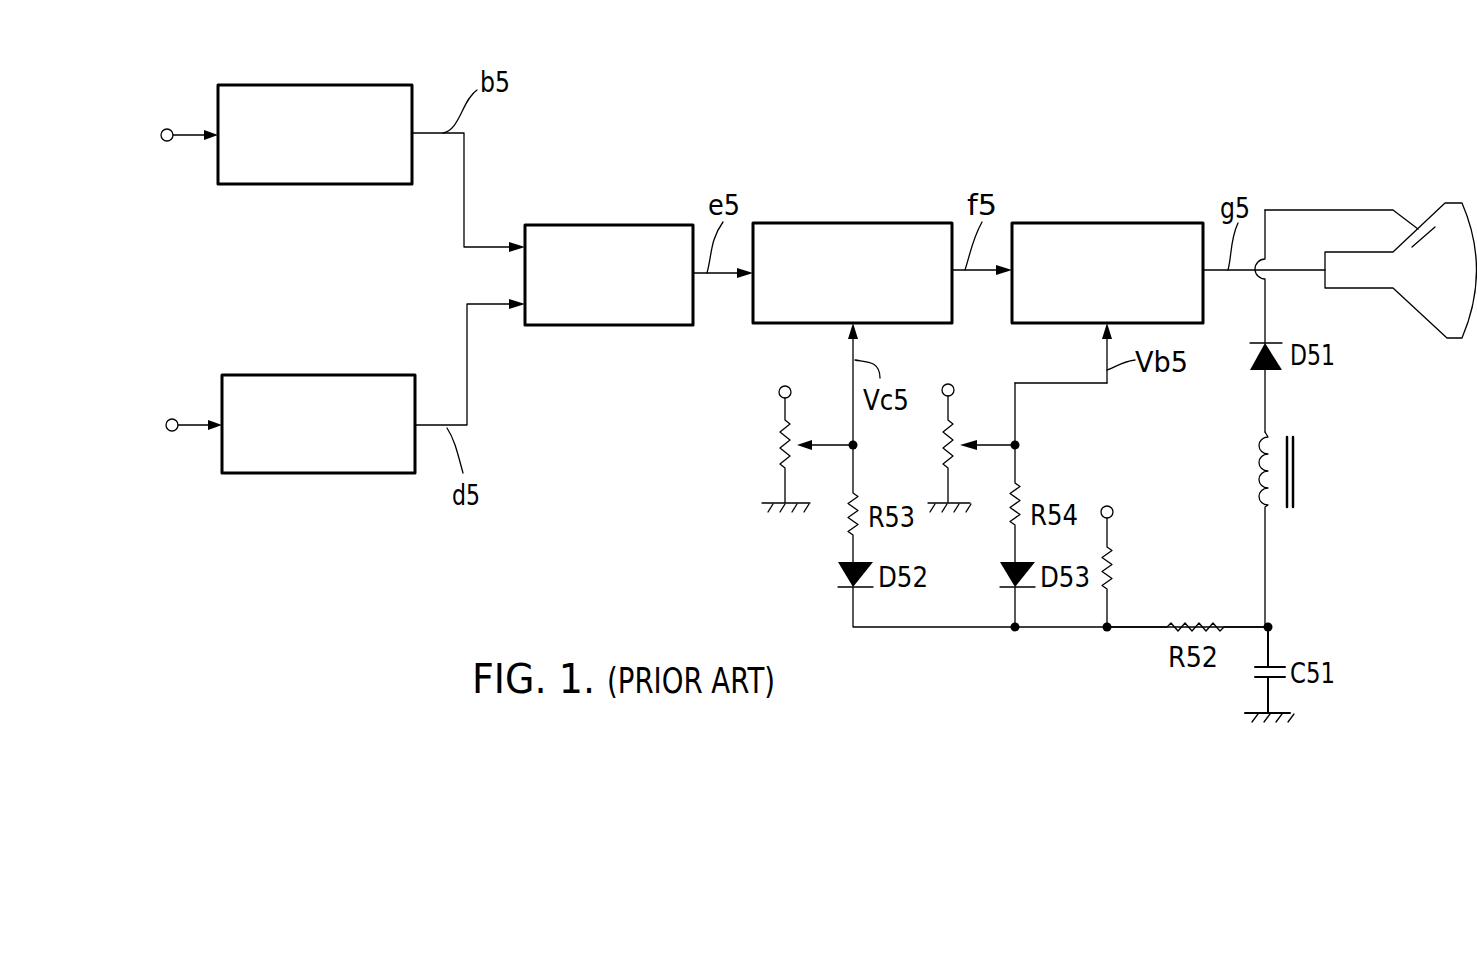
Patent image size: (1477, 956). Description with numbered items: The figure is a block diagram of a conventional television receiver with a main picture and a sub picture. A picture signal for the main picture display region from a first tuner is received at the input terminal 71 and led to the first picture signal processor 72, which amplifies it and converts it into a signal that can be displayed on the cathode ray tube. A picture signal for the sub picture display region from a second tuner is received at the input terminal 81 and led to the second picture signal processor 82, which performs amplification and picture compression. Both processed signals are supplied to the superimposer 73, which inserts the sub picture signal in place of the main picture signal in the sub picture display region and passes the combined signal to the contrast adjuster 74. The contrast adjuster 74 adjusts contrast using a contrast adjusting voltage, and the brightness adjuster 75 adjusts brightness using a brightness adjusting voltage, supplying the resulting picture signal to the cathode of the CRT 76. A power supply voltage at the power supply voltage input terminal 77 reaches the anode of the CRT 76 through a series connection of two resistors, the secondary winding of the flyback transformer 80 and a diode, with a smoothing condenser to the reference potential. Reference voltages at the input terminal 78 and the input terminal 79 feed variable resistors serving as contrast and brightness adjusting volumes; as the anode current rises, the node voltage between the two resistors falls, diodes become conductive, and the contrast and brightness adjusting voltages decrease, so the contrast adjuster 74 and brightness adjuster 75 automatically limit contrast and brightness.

The input terminal 71 is at (167, 128).
The first picture signal processor 72 is at (338, 85).
The superimposer 73 is at (610, 225).
The contrast adjuster 74 is at (860, 223).
The brightness adjuster 75 is at (1117, 223).
The cathode ray tube 76 is at (1383, 288).
The power supply voltage input terminal 77 is at (1114, 512).
The input terminal 78 is at (778, 392).
The input terminal 79 is at (955, 390).
The flyback transformer 80 is at (1298, 470).
The input terminal 81 is at (172, 418).
The second picture signal processor 82 is at (332, 375).